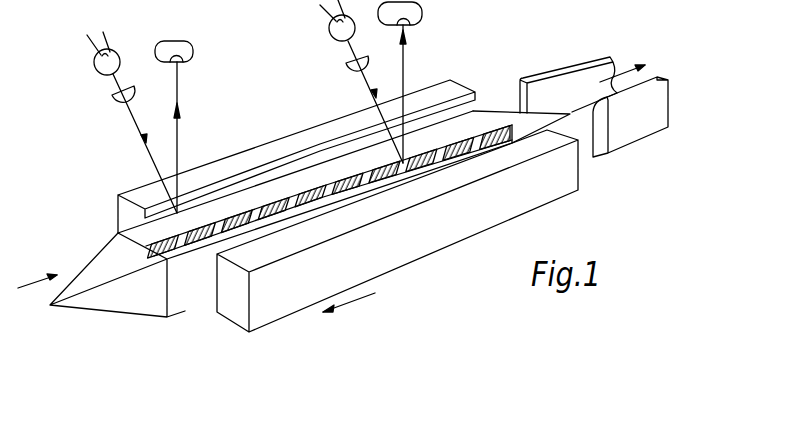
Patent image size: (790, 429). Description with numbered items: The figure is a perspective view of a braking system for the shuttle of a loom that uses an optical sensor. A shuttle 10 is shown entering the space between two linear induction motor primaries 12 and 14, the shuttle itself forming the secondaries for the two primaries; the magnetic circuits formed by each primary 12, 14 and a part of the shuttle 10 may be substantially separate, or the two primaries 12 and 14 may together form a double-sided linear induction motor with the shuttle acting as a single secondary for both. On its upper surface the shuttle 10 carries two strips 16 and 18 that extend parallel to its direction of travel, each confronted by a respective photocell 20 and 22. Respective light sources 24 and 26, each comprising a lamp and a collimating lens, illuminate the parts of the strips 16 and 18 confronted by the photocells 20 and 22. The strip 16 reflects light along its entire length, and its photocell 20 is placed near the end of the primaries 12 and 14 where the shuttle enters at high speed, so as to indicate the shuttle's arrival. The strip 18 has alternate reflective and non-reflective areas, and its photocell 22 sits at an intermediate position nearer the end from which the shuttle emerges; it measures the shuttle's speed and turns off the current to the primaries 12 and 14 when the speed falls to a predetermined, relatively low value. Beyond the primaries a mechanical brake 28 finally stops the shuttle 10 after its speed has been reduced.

The shuttle 10 is at (127, 302).
The linear induction motor primary 12 is at (118, 213).
The linear induction motor primary 14 is at (238, 315).
The strip 16 is at (138, 230).
The strip 18 is at (185, 243).
The photocell 20 is at (193, 53).
The photocell 22 is at (422, 14).
The light source 24 is at (112, 85).
The light source 26 is at (347, 50).
The mechanical brake 28 is at (580, 40).